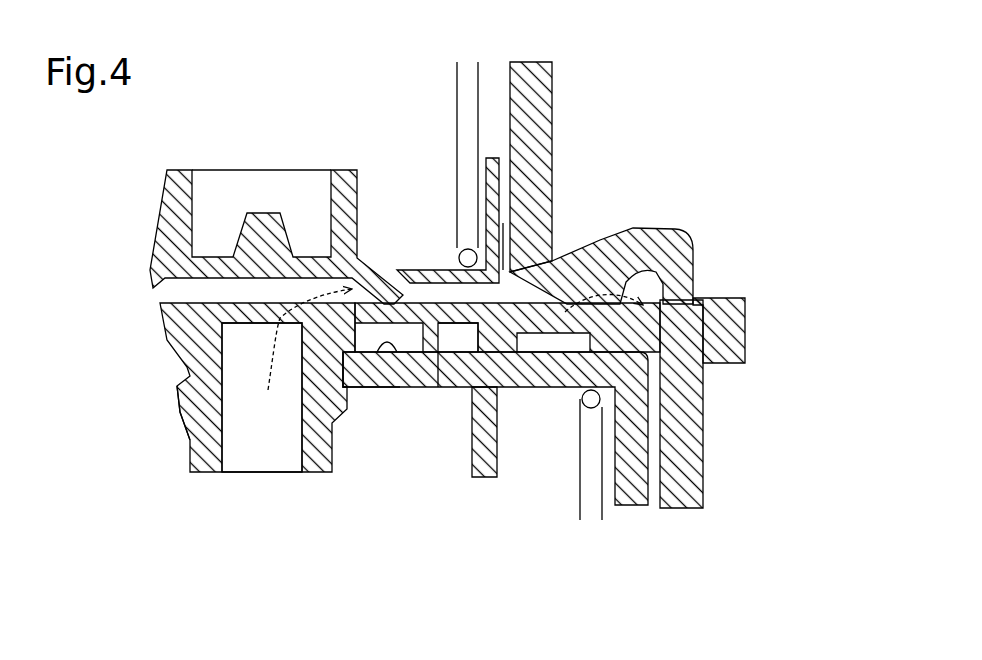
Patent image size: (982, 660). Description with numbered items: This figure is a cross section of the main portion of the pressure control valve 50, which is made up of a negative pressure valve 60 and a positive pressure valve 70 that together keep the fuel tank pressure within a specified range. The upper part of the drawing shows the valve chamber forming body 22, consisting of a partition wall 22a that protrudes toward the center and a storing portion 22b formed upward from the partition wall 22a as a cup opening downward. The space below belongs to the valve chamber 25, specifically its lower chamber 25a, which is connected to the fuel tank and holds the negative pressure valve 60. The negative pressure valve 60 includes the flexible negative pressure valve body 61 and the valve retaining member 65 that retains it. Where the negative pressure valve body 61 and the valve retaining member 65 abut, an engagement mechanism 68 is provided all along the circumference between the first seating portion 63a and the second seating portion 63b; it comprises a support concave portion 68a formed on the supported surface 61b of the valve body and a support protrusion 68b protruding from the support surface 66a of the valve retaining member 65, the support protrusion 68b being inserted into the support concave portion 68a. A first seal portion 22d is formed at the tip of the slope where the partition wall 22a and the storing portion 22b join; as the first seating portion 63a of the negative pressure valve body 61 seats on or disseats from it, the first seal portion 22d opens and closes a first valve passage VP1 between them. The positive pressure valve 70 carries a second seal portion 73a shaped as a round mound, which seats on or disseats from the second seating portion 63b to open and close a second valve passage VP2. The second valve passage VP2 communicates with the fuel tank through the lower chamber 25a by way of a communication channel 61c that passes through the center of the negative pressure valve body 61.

The valve chamber forming body 22 is at (765, 97).
The partition wall 22a is at (630, 240).
The storing portion 22b is at (552, 103).
The first seal portion 22d is at (717, 300).
The valve chamber 25 is at (168, 509).
The lower chamber 25a is at (207, 520).
The pressure control valve 50 is at (72, 248).
The negative pressure valve 60 is at (157, 345).
The negative pressure valve body 61 is at (690, 337).
The supported surface 61b is at (405, 390).
The communication channel 61c is at (240, 396).
The first seating portion 63a is at (603, 352).
The second seating portion 63b is at (357, 390).
The valve retaining member 65 is at (653, 455).
The support surface 66a is at (383, 350).
The engagement mechanism 68 is at (537, 570).
The support concave portion 68a is at (438, 392).
The support protrusion 68b is at (473, 392).
The positive pressure valve 70 is at (156, 254).
The second seal portion 73a is at (432, 290).
The first valve passage VP1 is at (524, 390).
The second valve passage VP2 is at (267, 390).